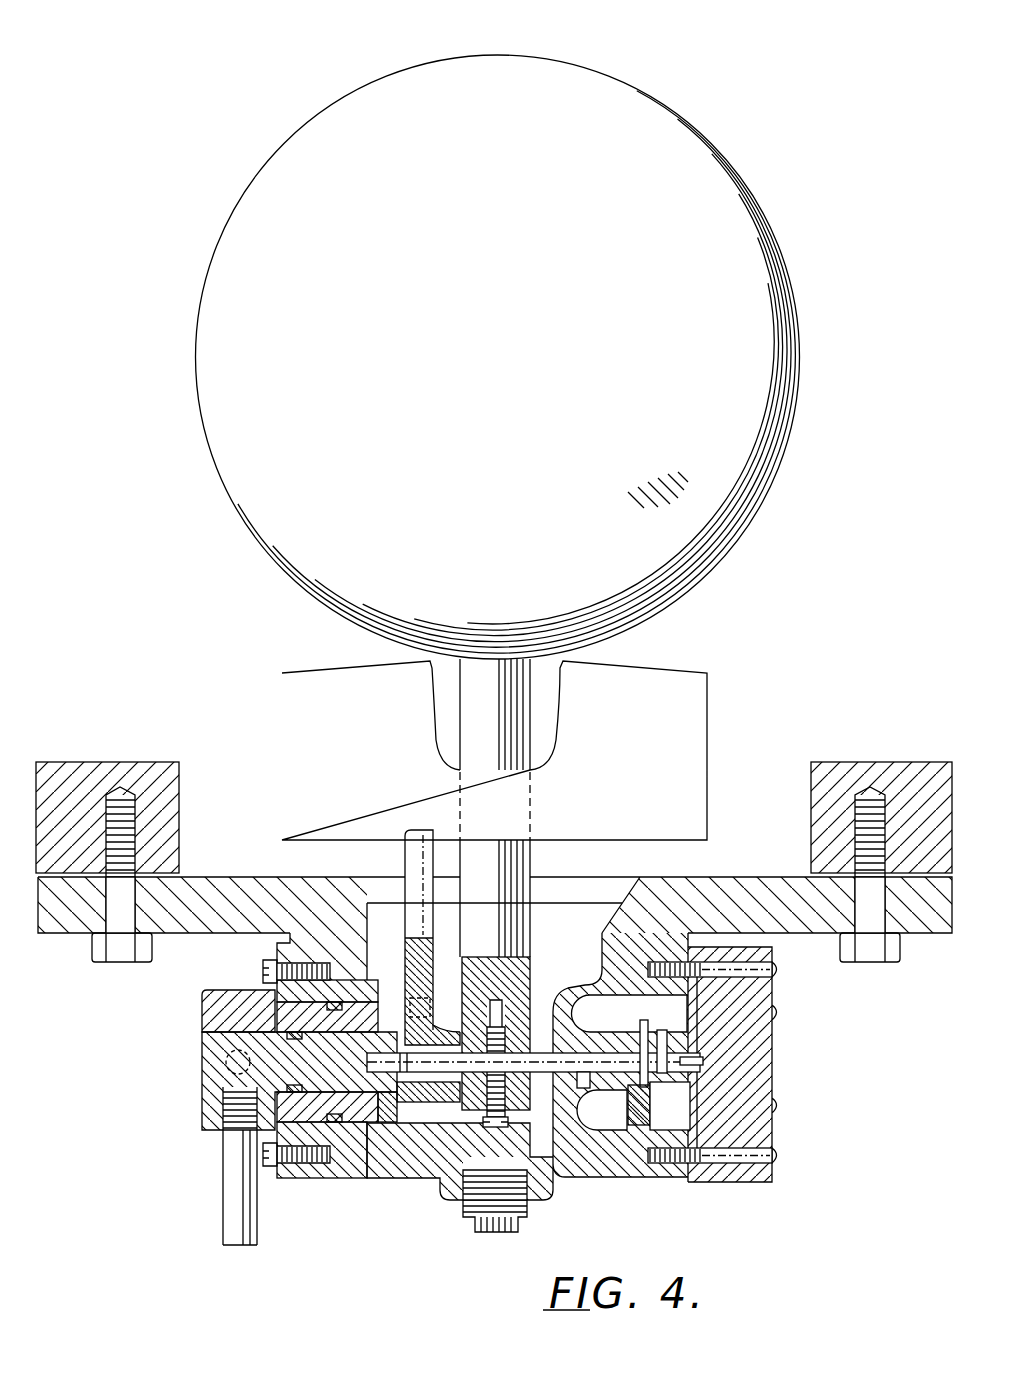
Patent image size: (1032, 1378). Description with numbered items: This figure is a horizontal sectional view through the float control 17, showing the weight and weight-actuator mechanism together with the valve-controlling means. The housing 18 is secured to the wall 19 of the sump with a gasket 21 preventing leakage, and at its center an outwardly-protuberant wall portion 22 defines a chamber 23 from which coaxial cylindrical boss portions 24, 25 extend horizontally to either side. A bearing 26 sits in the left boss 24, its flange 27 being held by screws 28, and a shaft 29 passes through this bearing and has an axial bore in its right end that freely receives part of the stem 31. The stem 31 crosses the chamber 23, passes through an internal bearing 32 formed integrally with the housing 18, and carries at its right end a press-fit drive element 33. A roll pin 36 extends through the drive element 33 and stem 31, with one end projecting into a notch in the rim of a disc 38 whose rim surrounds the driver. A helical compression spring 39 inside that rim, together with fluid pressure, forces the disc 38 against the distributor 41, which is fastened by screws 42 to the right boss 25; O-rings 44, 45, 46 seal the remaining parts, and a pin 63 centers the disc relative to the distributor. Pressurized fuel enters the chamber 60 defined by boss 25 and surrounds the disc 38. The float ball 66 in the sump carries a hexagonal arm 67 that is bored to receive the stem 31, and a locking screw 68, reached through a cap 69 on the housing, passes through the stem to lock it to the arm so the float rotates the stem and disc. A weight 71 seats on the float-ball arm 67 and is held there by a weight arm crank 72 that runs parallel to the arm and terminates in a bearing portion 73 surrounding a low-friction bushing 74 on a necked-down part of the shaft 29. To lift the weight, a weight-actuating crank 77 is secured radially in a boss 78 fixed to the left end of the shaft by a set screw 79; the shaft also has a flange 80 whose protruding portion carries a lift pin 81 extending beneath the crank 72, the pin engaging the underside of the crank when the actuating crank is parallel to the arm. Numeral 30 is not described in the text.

The float control 17 is at (194, 633).
The housing 18 is at (427, 1173).
The wall 19 is at (87, 772).
The gasket 21 is at (825, 876).
The outwardly-protuberant wall portion 22 is at (565, 1176).
The chamber 23 is at (575, 941).
The boss portion 24 is at (343, 1176).
The boss portion 25 is at (664, 1180).
The bearing 26 is at (357, 1002).
The flange 27 is at (277, 952).
The screws 28 is at (308, 1164).
The shaft 29 is at (346, 1104).
The wall 30 is at (608, 1130).
The stem 31 is at (554, 1052).
The internal bearing 32 is at (602, 1110).
The drive element 33 is at (637, 1087).
The roll pin 36 is at (640, 1020).
The disc 38 is at (678, 1090).
The helical compression spring 39 is at (678, 1010).
The distributor 41 is at (772, 1058).
The screws 42 is at (772, 1159).
The O-ring 44 is at (590, 1080).
The O-ring 45 is at (332, 1009).
The O-ring 46 is at (348, 1087).
The chamber 60 is at (637, 1000).
The pin 63 is at (705, 1045).
The float ball 66 is at (773, 455).
The arm 67 is at (531, 857).
The locking screw 68 is at (505, 1123).
The cap 69 is at (462, 1203).
The weight 71 is at (690, 678).
The weight arm crank 72 is at (405, 858).
The bearing portion 73 is at (474, 980).
The bushing 74 is at (436, 1103).
The weight-actuating crank 77 is at (228, 1228).
The boss 78 is at (202, 1022).
The set screw 79 is at (226, 1063).
The flange 80 is at (392, 1105).
The lift pin 81 is at (407, 972).